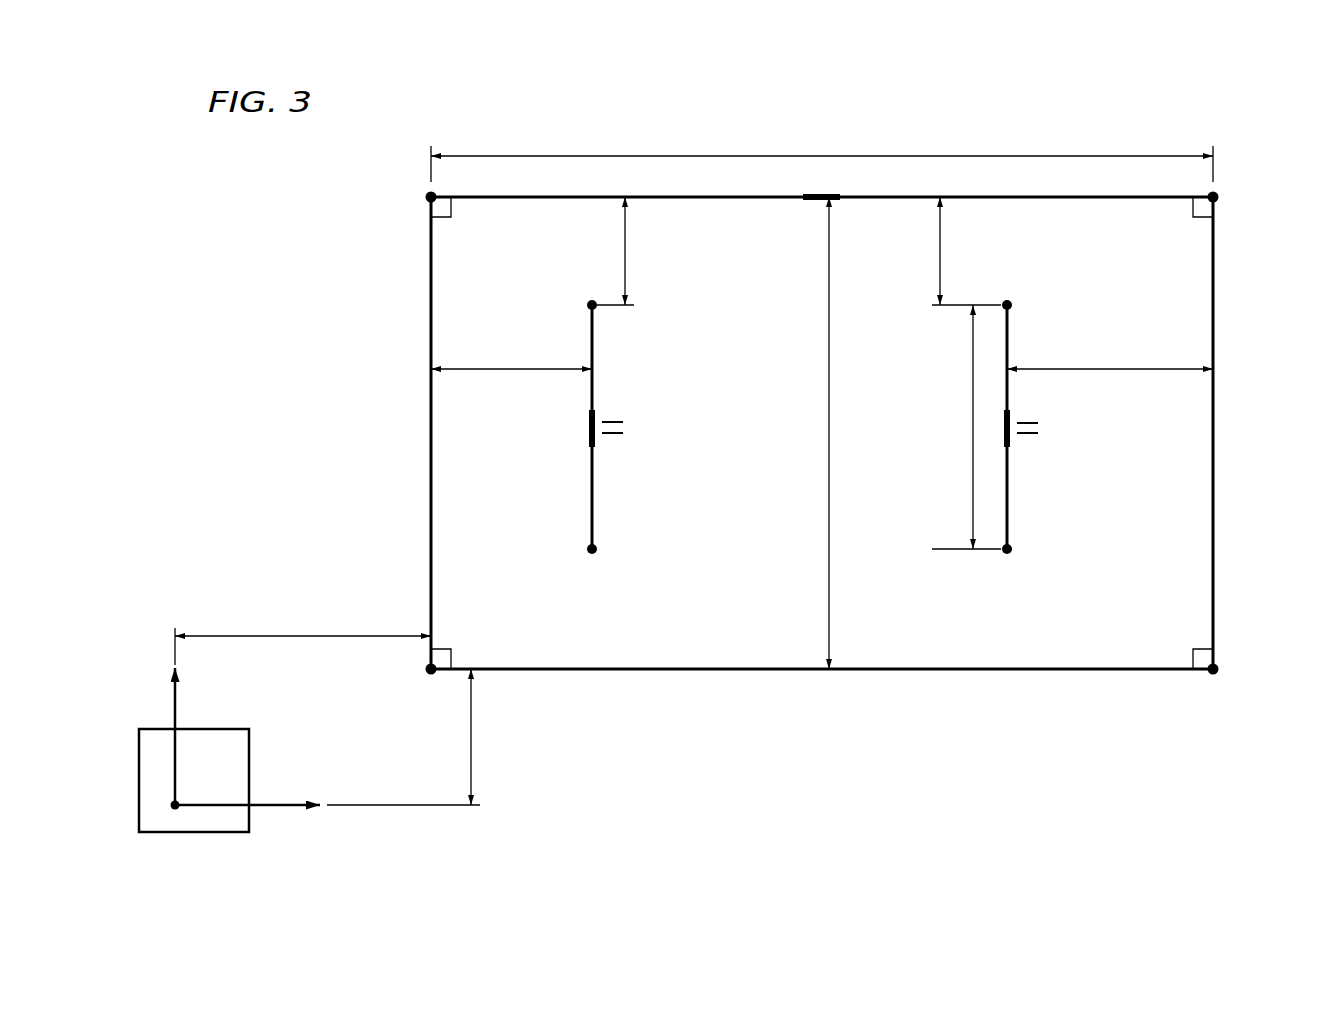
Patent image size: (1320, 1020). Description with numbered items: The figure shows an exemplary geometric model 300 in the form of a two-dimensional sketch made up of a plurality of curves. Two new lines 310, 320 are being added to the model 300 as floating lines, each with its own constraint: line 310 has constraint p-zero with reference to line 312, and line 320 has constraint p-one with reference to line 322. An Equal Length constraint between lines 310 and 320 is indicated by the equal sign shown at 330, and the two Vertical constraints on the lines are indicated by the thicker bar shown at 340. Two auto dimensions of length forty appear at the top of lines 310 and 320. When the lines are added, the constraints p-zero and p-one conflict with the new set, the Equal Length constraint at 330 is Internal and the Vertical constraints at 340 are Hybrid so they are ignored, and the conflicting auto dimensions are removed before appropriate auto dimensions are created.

The geometric model 300 is at (273, 146).
The line 310 is at (582, 530).
The line 312 is at (424, 422).
The line 320 is at (1010, 520).
The line 322 is at (1215, 416).
The equal sign 330 is at (1040, 432).
The thicker bar 340 is at (582, 432).